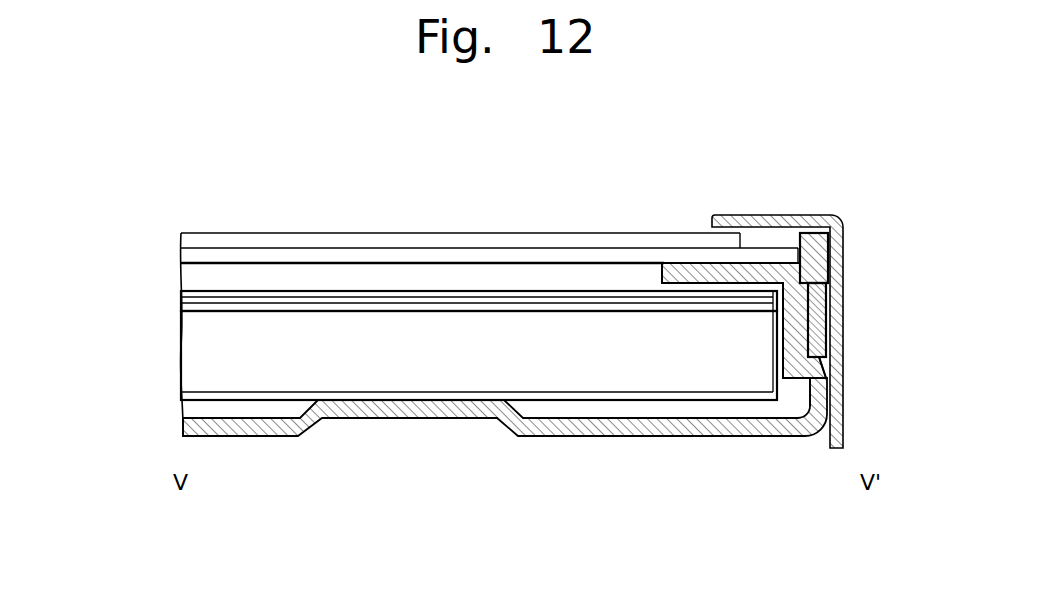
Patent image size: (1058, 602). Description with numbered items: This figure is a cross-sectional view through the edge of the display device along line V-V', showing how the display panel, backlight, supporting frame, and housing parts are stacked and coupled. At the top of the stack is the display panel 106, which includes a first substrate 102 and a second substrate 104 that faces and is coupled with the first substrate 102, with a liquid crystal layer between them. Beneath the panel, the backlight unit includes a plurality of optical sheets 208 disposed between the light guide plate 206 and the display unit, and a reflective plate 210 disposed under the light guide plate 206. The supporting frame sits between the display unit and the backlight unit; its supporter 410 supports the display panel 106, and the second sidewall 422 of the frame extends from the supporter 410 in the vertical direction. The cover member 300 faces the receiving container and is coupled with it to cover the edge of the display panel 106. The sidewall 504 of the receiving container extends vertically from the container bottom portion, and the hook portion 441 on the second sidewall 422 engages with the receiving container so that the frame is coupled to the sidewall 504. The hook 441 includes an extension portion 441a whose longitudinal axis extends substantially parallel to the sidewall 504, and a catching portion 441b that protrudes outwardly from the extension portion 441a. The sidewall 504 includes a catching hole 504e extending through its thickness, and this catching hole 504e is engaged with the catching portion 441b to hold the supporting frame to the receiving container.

The first substrate 102 is at (188, 241).
The second substrate 104 is at (188, 253).
The display panel 106 is at (425, 249).
The optical sheets 208 is at (172, 290).
The light guide plate 206 is at (187, 343).
The reflective plate 210 is at (192, 396).
The supporter 410 is at (703, 272).
The cover member 300 is at (758, 216).
The second sidewall 422 is at (812, 245).
The sidewall 504 is at (820, 323).
The catching hole 504e is at (830, 376).
The extension portion 441a is at (786, 308).
The catching portion 441b is at (803, 383).
The hook portion 441 is at (790, 419).